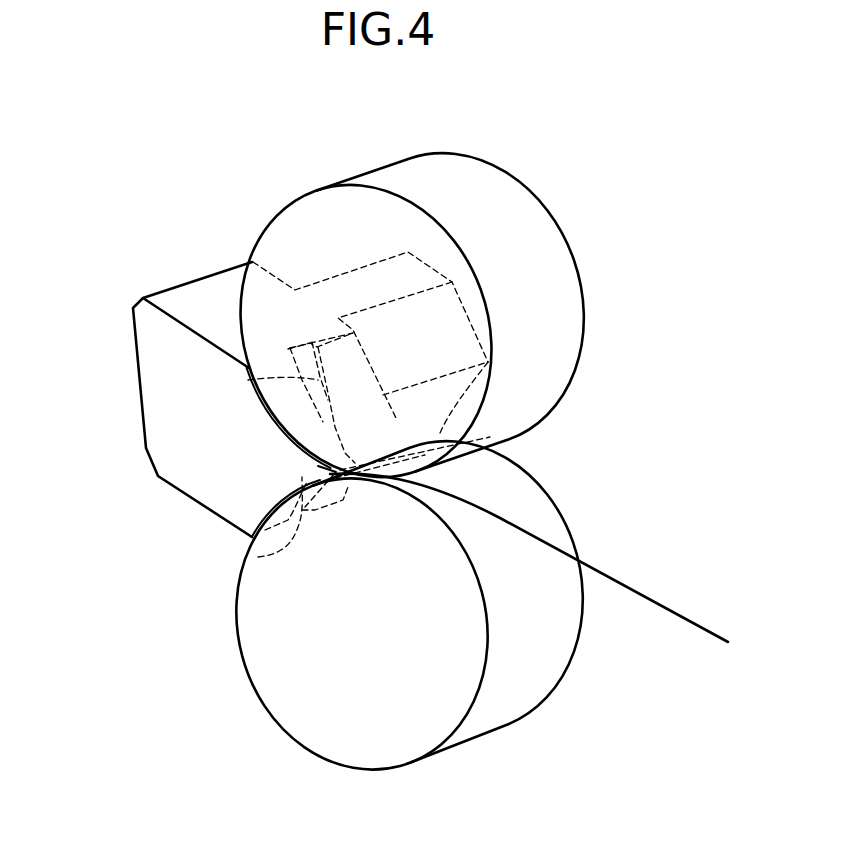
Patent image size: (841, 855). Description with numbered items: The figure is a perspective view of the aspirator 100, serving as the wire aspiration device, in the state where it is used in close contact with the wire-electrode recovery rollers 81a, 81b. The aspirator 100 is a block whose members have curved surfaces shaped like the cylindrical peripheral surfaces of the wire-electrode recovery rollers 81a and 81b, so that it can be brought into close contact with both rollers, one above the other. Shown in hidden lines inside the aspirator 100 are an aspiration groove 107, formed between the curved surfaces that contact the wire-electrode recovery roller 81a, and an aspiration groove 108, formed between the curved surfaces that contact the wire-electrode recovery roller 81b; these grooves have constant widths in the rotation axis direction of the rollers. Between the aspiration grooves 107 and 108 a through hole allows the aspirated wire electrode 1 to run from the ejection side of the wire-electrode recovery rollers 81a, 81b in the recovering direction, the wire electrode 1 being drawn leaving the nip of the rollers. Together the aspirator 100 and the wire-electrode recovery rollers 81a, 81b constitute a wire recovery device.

The wire electrode 1 is at (672, 607).
The wire-electrode recovery roller 81a is at (308, 221).
The wire-electrode recovery roller 81b is at (312, 722).
The aspirator 100 is at (192, 300).
The aspiration groove 107 is at (288, 349).
The aspiration groove 108 is at (258, 557).